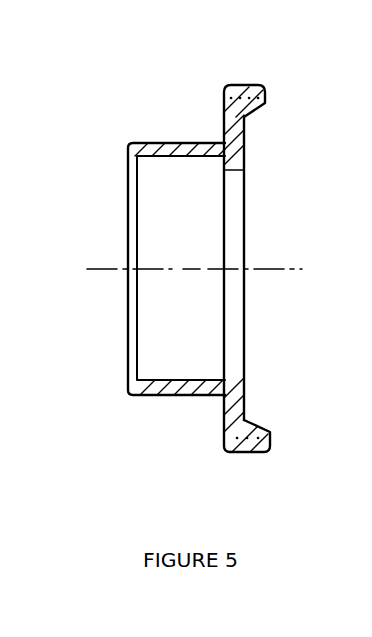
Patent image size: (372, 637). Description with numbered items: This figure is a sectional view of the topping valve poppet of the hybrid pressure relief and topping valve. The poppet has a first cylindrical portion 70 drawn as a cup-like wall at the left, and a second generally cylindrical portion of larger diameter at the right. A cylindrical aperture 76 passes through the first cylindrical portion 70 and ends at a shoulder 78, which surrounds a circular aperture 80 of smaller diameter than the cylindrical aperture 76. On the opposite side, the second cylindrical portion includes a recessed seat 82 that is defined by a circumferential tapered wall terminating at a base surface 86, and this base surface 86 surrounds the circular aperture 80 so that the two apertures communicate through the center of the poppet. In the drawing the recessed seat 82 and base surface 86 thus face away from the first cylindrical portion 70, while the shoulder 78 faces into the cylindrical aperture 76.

The first cylindrical portion 70 is at (167, 140).
The cylindrical aperture 76 is at (190, 315).
The shoulder 78 is at (237, 150).
The circular aperture 80 is at (241, 303).
The recessed seat 82 is at (246, 148).
The base surface 86 is at (244, 383).